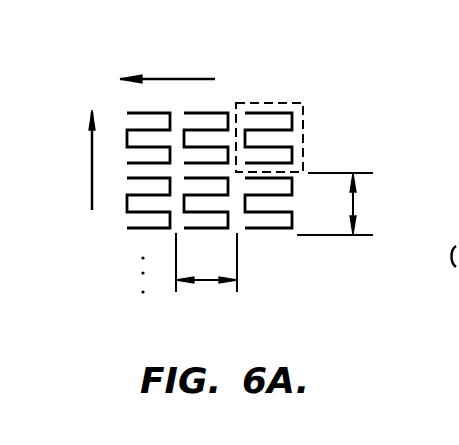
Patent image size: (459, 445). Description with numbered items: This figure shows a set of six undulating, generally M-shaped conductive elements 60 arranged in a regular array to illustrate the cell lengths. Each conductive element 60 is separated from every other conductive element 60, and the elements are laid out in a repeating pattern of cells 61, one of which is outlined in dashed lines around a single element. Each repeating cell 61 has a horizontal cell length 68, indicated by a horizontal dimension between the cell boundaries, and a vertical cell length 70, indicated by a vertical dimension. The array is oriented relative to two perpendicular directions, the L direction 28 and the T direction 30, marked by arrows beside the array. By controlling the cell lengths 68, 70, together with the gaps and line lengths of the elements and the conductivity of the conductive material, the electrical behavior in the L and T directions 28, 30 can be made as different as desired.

The L direction 28 is at (92, 178).
The T direction 30 is at (163, 79).
The undulating conductive element 60 is at (266, 110).
The cell 61 is at (306, 110).
The horizontal cell length 68 is at (204, 283).
The vertical cell length 70 is at (357, 200).